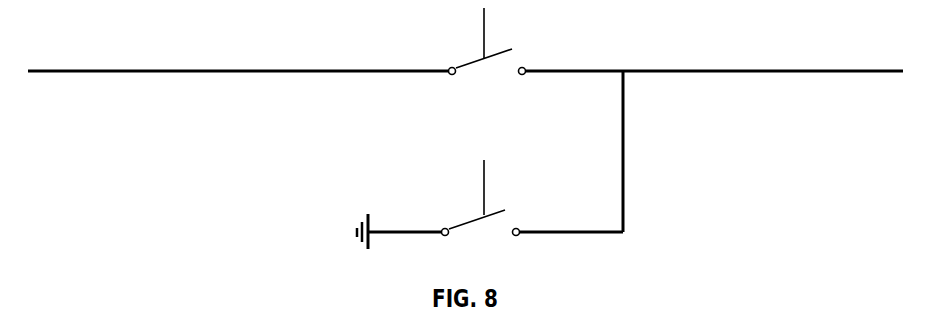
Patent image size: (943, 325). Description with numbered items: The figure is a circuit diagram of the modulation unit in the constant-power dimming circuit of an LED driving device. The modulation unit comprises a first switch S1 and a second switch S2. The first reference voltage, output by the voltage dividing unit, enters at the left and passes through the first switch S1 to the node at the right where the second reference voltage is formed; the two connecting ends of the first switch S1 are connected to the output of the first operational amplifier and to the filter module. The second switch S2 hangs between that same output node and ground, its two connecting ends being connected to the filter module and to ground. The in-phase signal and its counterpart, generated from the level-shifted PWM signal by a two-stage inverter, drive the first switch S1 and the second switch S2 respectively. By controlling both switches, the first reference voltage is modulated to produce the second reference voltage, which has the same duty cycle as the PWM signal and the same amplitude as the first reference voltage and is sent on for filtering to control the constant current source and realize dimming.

The first switch S1 is at (487, 87).
The second switch S2 is at (481, 245).